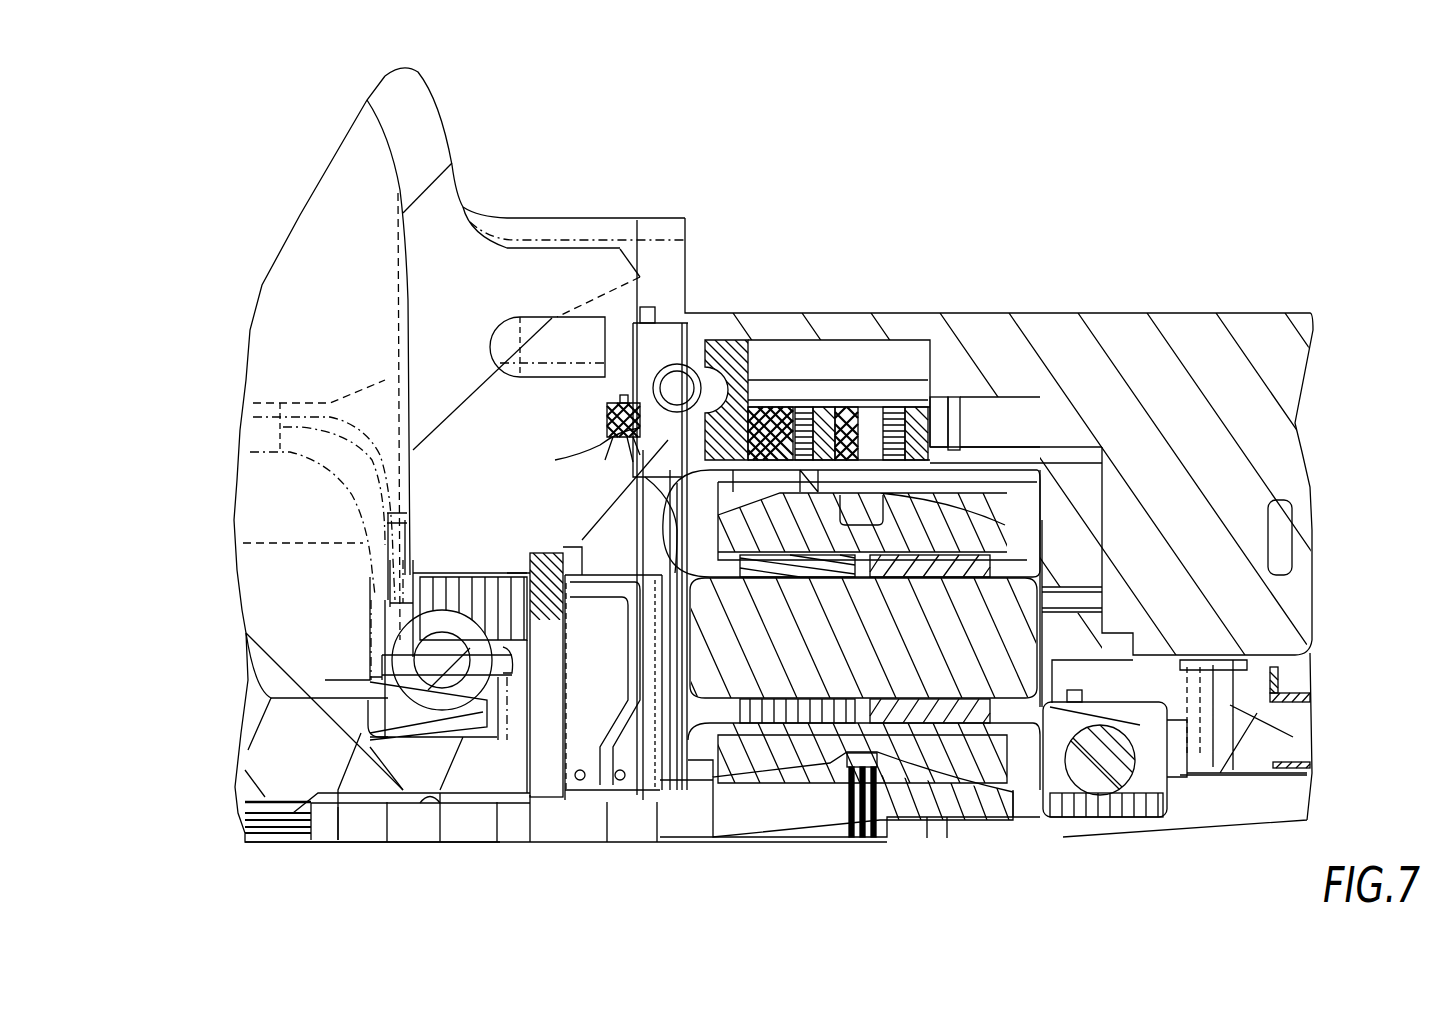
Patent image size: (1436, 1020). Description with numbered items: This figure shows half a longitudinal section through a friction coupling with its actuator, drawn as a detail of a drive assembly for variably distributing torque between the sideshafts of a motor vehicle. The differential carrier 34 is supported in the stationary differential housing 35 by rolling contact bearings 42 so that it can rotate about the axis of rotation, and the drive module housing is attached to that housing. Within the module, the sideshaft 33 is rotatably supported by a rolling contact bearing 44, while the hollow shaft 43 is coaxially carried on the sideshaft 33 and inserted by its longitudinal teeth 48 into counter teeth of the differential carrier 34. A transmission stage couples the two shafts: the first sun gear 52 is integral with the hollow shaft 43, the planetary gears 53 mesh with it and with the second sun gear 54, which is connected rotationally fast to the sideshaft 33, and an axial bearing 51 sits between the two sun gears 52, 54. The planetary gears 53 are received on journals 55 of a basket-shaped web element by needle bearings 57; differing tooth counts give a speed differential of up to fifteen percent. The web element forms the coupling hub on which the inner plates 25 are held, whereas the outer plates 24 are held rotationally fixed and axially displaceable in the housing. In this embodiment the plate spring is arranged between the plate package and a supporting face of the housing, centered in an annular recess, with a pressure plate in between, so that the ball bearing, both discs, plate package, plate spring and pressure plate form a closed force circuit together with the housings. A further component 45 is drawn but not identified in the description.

The outer plates 24 is at (757, 400).
The inner plates 25 is at (827, 407).
The sideshaft 33 is at (1283, 815).
The differential carrier 34 is at (271, 755).
The differential housing 35 is at (430, 157).
The rolling contact bearings 42 is at (477, 600).
The hollow shaft 43 is at (680, 797).
The rolling contact bearing 44 is at (1127, 803).
The seal 45 is at (1273, 713).
The longitudinal teeth 48 is at (436, 803).
The axial bearing 51 is at (853, 833).
The first sun gear 52 is at (813, 773).
The planetary gears 53 is at (985, 538).
The second sun gear 54 is at (955, 817).
The journals 55 is at (1020, 650).
The needle bearings 57 is at (983, 565).